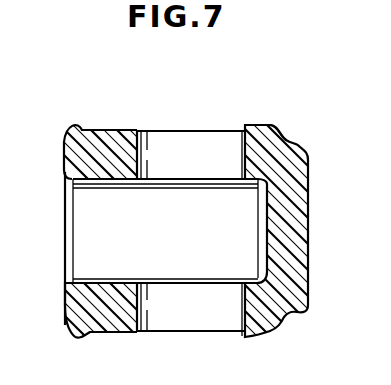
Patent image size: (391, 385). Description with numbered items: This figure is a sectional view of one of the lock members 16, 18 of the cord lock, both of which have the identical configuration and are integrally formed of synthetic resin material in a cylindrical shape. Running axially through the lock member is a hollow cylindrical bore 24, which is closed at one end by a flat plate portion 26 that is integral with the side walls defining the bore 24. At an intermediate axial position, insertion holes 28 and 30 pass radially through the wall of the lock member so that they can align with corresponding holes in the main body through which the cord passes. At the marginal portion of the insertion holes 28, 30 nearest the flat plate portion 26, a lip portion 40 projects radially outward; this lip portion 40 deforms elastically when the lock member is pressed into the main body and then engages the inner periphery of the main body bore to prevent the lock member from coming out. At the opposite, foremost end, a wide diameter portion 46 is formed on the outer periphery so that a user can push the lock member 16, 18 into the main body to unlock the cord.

The lock member 16 is at (127, 129).
The lock member 18 is at (127, 129).
The cylindrical bore 24 is at (64, 218).
The flat plate portion 26 is at (308, 218).
The insertion hole 28 is at (217, 129).
The insertion hole 30 is at (187, 333).
The lip portion 40 is at (249, 124).
The wide diameter portion 46 is at (82, 127).